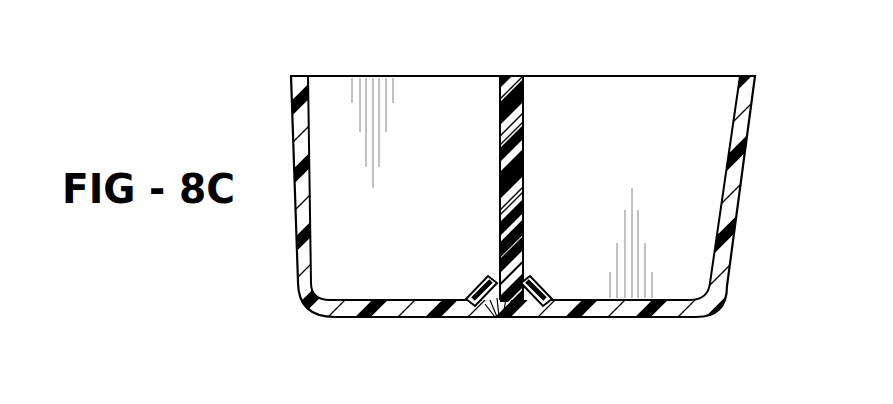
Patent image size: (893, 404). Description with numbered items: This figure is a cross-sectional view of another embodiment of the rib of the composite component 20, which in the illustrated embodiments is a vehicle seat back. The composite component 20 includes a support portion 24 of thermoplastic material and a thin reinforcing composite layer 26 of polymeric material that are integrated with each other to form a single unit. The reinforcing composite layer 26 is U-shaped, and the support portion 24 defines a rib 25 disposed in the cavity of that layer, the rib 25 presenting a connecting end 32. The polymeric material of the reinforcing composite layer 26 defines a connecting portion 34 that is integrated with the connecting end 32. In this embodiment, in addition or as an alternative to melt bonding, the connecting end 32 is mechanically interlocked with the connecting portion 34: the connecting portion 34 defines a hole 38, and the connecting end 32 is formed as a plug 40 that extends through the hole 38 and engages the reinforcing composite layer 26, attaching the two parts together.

The composite component 20 is at (297, 284).
The support portion 24 is at (524, 178).
The rib 25 is at (524, 107).
The reinforcing composite layer 26 is at (309, 163).
The connecting end 32 is at (500, 320).
The connecting portion 34 is at (533, 298).
The hole 38 is at (503, 320).
The plug 40 is at (497, 320).